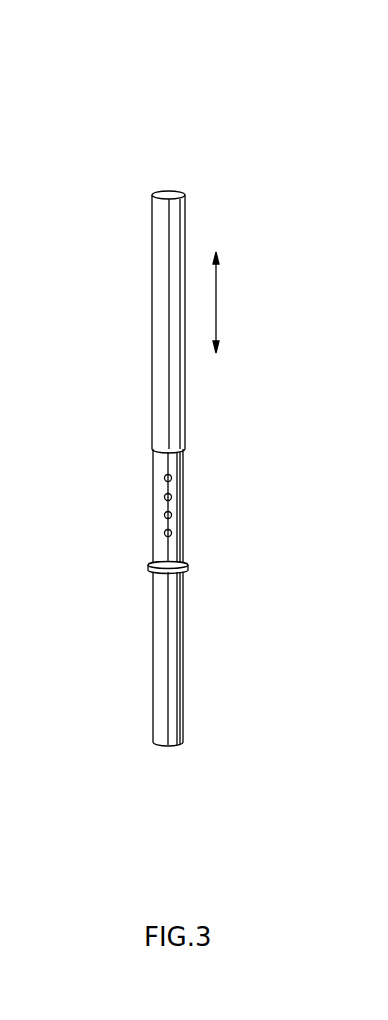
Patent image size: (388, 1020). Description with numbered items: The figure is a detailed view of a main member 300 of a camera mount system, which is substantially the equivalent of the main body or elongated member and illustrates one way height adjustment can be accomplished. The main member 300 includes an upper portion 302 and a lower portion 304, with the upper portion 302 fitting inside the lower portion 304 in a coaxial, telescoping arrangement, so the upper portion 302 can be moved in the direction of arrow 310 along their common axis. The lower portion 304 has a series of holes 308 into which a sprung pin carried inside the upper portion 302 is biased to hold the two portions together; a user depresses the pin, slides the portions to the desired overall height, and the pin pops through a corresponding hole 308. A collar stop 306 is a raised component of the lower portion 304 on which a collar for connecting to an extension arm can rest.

The main member 300 is at (287, 57).
The upper portion 302 is at (152, 256).
The lower portion 304 is at (153, 496).
The collar stop 306 is at (188, 566).
The holes 308 is at (172, 477).
The arrow 310 is at (216, 305).